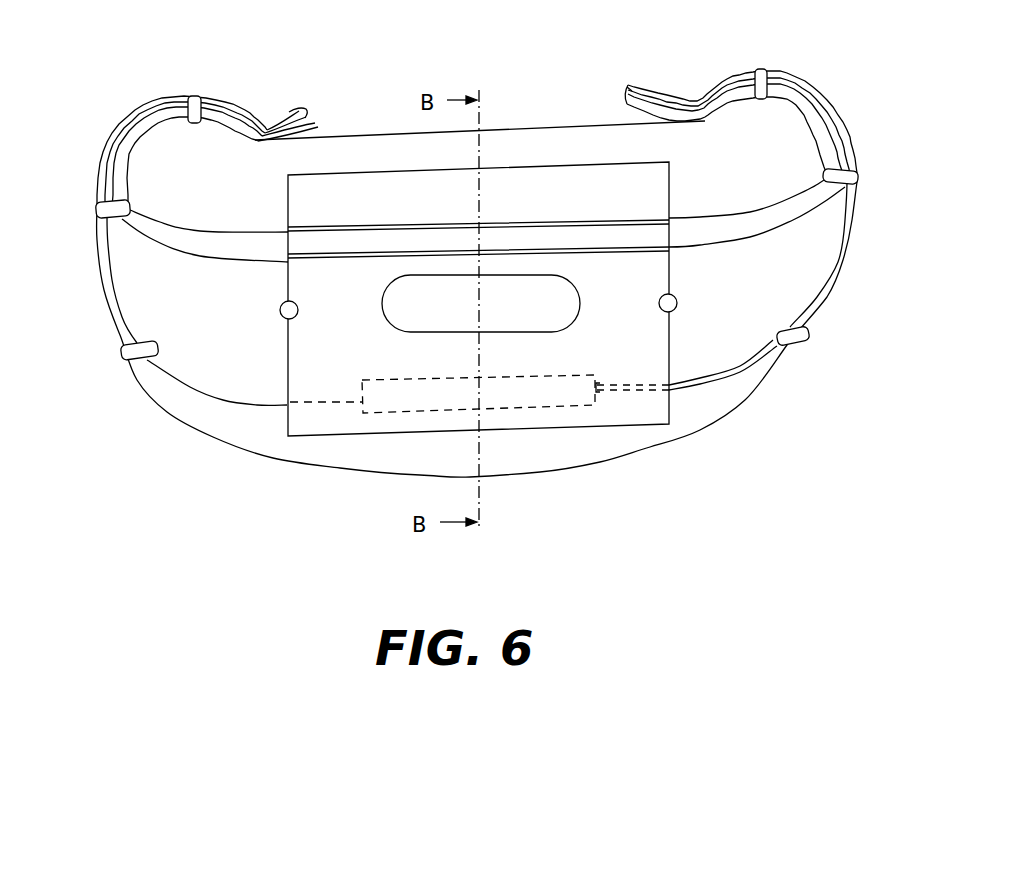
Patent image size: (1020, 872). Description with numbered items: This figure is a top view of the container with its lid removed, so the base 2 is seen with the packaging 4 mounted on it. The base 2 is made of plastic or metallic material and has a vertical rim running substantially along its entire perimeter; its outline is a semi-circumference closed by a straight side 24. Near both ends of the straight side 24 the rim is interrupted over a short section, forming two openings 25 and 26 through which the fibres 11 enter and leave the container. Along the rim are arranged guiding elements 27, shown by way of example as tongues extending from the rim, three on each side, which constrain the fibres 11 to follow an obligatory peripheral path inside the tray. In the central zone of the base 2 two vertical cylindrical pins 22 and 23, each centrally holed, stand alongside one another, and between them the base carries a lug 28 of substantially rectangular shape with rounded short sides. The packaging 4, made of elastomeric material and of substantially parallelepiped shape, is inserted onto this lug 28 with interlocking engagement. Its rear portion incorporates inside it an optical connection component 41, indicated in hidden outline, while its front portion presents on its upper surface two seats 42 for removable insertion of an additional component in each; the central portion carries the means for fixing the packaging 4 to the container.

The base 2 is at (598, 460).
The packaging 4 is at (320, 440).
The fibres 11 is at (209, 262).
The vertical cylindrical pin 22 is at (280, 310).
The vertical cylindrical pin 23 is at (676, 305).
The straight side 24 is at (557, 122).
The opening 25 is at (270, 128).
The opening 26 is at (700, 112).
The guiding elements 27 is at (197, 97).
The lug 28 is at (570, 308).
The optical connection component 41 is at (548, 390).
The seats 42 is at (548, 252).